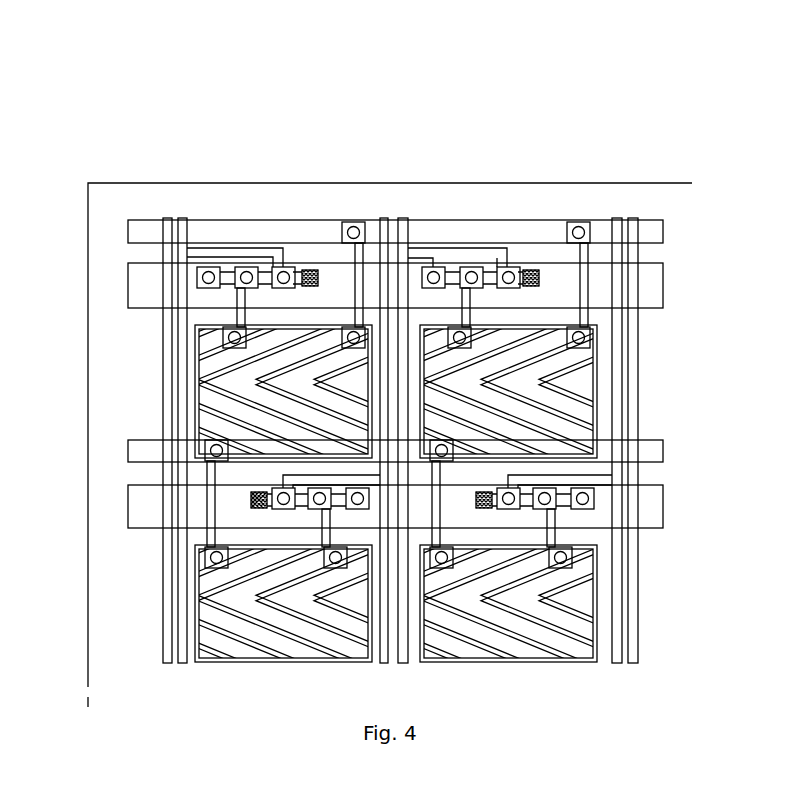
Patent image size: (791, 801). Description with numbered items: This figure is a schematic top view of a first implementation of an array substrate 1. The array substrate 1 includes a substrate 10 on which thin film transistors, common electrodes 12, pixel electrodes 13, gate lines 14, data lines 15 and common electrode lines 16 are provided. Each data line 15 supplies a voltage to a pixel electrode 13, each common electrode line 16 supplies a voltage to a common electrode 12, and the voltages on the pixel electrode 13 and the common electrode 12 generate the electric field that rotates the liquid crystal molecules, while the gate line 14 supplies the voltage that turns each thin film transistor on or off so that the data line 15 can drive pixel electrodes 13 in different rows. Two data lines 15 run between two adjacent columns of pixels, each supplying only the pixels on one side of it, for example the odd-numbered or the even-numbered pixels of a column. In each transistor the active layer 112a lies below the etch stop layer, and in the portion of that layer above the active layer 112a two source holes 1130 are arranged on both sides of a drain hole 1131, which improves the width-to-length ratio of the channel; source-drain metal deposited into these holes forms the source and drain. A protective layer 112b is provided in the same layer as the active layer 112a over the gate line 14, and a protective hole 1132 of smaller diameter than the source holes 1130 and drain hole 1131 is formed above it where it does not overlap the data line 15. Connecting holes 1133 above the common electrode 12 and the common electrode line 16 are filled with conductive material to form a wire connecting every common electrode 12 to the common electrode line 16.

The array substrate 1 is at (437, 35).
The substrate 10 is at (518, 182).
The common electrode 12 is at (198, 375).
The pixel electrode 13 is at (247, 400).
The gate line 14 is at (142, 508).
The data line 15 is at (182, 598).
The common electrode line 16 is at (150, 450).
The source hole 1130 is at (207, 272).
The drain hole 1131 is at (247, 275).
The protective hole 1132 is at (311, 276).
The connecting hole 1133 is at (354, 336).
The active layer 112a is at (478, 267).
The protective layer 112b is at (533, 272).